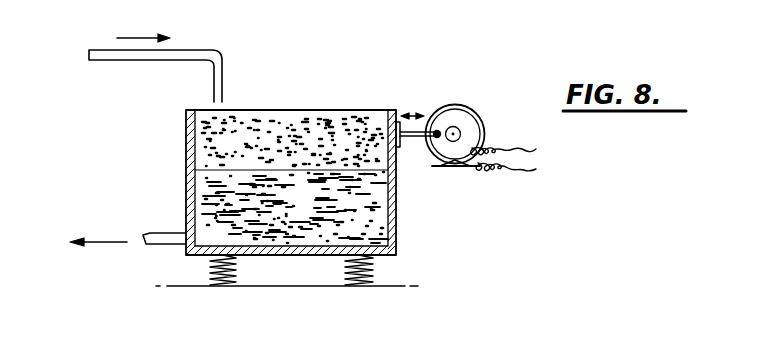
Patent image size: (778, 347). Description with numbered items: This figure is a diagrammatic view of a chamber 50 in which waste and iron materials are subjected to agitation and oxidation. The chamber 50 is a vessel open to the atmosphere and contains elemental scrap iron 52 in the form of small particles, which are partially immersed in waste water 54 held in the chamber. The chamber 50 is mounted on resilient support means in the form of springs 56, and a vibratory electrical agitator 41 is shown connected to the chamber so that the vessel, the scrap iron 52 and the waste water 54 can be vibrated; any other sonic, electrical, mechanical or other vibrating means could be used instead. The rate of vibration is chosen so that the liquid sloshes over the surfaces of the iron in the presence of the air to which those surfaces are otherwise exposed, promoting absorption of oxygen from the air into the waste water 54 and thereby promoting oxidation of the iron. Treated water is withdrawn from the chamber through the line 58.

The vibratory electrical agitator 41 is at (481, 118).
The chamber 50 is at (186, 137).
The elemental scrap iron 52 is at (340, 137).
The waste water 54 is at (195, 193).
The resilient support means 56 is at (211, 283).
The line 58 is at (162, 245).